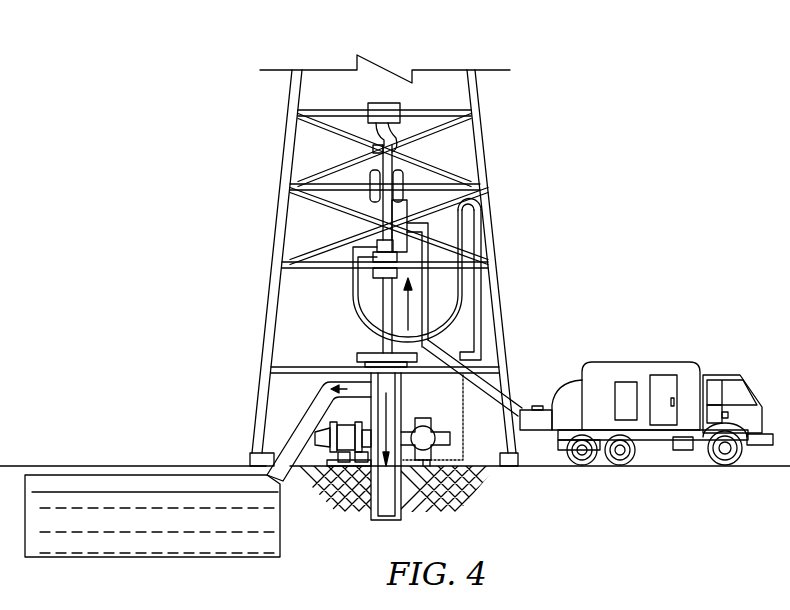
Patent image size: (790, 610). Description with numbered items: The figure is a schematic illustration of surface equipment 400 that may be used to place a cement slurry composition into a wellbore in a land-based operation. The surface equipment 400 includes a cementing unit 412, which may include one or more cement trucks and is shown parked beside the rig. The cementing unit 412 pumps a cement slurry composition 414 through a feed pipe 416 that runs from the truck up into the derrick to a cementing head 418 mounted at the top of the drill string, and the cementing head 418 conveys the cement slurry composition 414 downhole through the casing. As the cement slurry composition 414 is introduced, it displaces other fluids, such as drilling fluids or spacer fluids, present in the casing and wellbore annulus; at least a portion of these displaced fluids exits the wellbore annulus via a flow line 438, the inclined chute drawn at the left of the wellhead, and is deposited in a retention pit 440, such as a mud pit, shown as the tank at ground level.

The surface equipment 400 is at (232, 23).
The cementing unit 412 is at (660, 447).
The cement slurry composition 414 is at (386, 293).
The feed pipe 416 is at (487, 393).
The cementing head 418 is at (404, 178).
The flow line 438 is at (267, 437).
The retention pit 440 is at (187, 557).